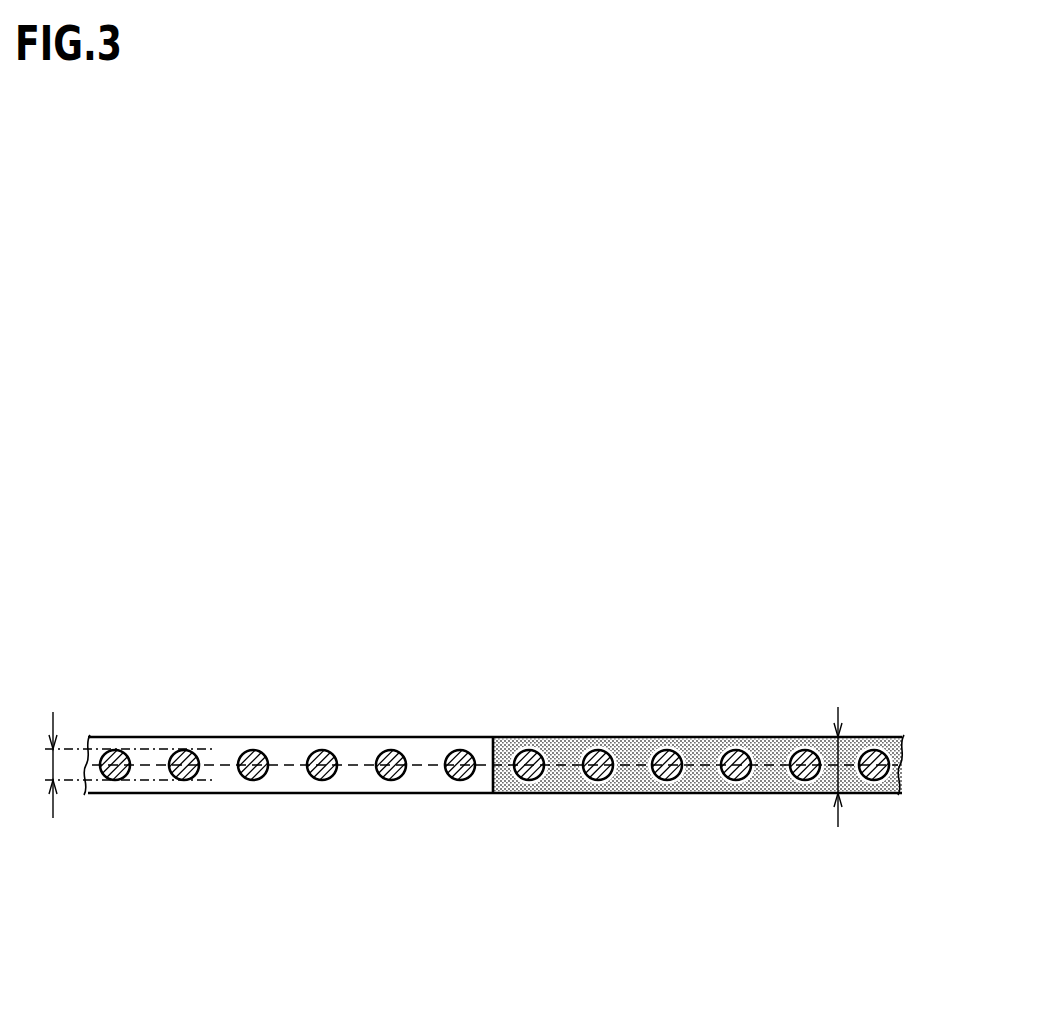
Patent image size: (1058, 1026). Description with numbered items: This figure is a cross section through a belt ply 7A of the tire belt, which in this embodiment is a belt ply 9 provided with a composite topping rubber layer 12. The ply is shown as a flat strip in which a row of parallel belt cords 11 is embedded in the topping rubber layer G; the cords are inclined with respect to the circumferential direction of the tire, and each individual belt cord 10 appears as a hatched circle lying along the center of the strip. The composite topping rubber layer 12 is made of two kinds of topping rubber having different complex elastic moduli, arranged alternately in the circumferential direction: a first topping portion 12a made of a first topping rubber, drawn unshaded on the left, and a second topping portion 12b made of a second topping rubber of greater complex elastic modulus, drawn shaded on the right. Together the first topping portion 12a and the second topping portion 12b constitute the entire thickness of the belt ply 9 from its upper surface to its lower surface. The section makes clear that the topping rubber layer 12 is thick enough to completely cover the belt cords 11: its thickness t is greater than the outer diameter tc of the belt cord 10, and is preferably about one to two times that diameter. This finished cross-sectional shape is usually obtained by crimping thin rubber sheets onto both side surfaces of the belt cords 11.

The belt ply 7A is at (461, 737).
The belt ply 9 is at (704, 688).
The belt cord 10 is at (127, 779).
The belt cords 11 is at (697, 903).
The composite topping rubber layer 12 is at (474, 655).
The topping rubber layer G is at (352, 583).
The first topping portion 12a is at (355, 737).
The second topping portion 12b is at (567, 737).
The thickness of the topping rubber layer t is at (838, 750).
The outer diameter of the belt cord tc is at (38, 765).